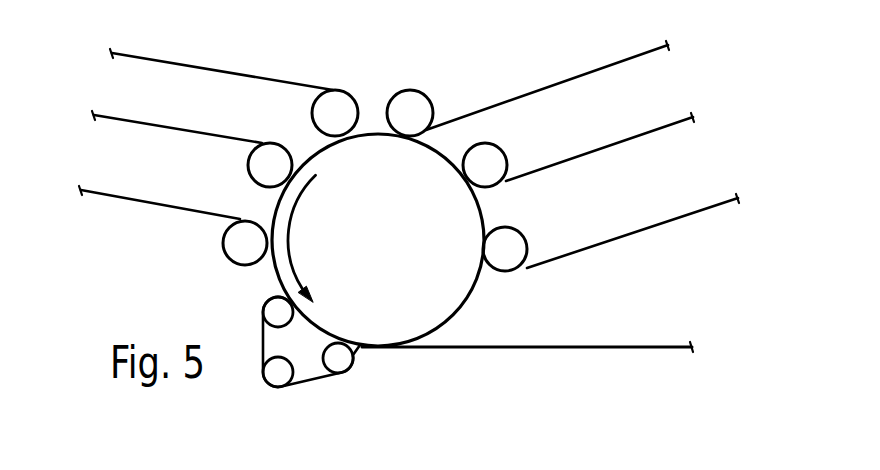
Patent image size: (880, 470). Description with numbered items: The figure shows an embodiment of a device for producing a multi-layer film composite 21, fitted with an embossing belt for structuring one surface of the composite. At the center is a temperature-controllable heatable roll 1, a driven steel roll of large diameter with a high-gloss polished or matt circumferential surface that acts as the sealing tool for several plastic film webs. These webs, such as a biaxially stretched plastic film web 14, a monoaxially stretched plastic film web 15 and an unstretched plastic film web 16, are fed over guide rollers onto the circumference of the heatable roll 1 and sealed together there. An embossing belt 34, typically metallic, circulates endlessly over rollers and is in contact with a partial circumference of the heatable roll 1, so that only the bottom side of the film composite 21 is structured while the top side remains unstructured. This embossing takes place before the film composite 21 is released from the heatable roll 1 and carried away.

The heatable roll 1 is at (440, 295).
The biaxially stretched plastic film web 14 is at (250, 75).
The monoaxially stretched plastic film web 15 is at (191, 100).
The unstretched plastic film web 16 is at (112, 196).
The multi-layer film composite 21 is at (587, 350).
The embossing belt 34 is at (318, 382).